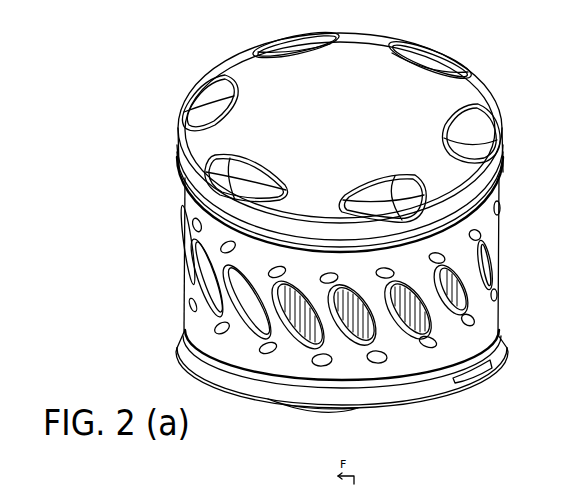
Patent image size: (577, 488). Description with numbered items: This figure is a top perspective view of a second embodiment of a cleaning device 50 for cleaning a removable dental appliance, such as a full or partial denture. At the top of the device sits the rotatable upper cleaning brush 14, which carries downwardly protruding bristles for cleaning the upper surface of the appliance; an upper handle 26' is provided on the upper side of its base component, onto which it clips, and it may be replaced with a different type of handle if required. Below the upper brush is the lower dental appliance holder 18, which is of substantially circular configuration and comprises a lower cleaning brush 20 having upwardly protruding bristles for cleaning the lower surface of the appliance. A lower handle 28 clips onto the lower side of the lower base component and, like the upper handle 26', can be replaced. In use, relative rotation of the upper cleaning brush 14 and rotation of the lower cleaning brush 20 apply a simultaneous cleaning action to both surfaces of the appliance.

The rotatable upper cleaning brush 14 is at (317, 139).
The cleaning device 50 is at (173, 89).
The upper handle 26' is at (358, 124).
The lower dental appliance holder 18 is at (148, 363).
The lower cleaning brush 20 is at (354, 392).
The lower handle 28 is at (292, 402).